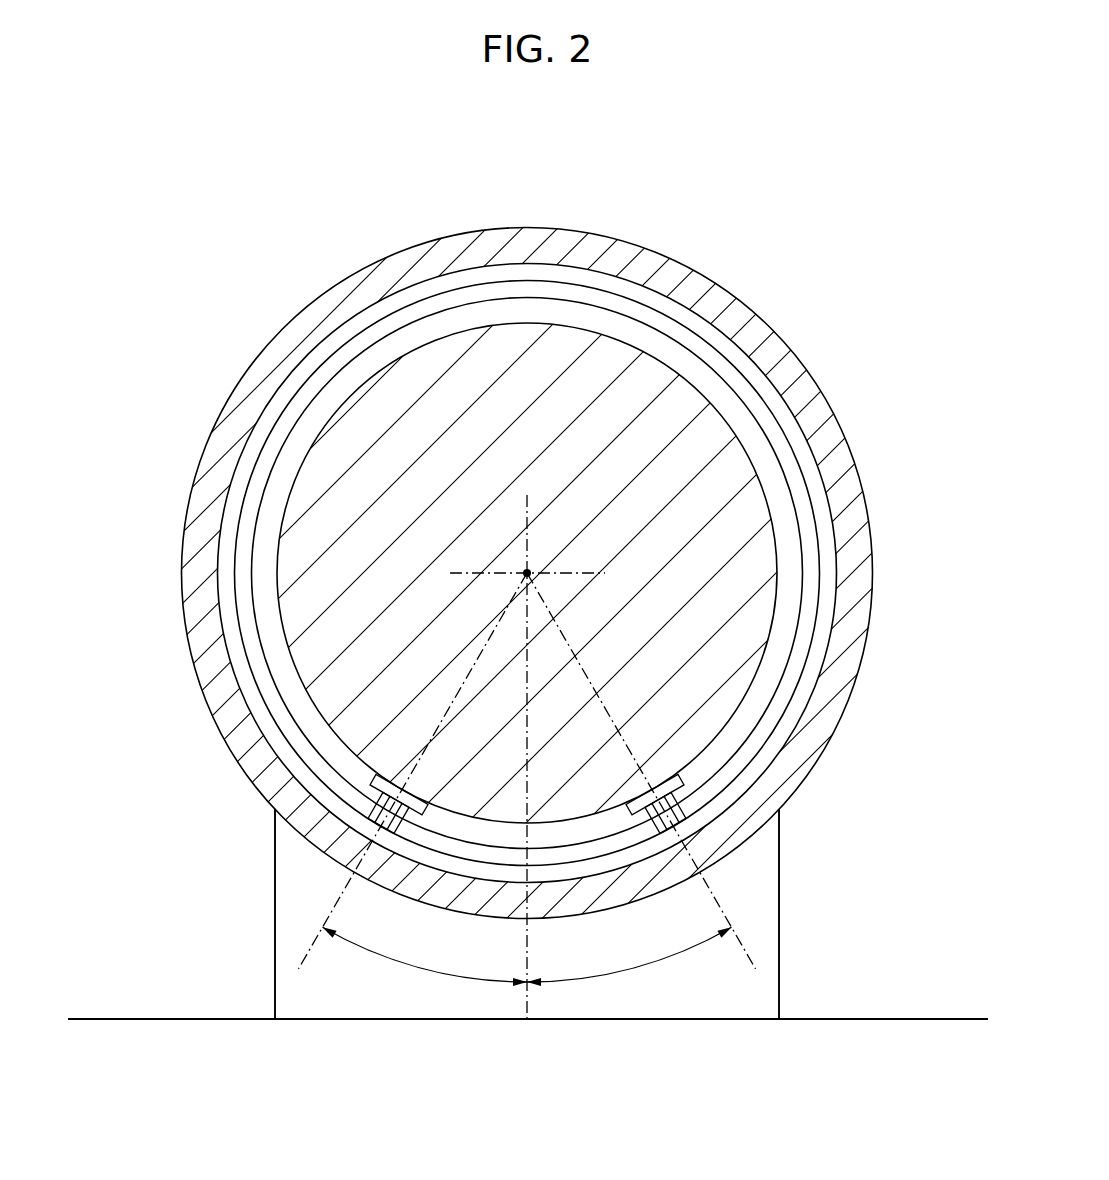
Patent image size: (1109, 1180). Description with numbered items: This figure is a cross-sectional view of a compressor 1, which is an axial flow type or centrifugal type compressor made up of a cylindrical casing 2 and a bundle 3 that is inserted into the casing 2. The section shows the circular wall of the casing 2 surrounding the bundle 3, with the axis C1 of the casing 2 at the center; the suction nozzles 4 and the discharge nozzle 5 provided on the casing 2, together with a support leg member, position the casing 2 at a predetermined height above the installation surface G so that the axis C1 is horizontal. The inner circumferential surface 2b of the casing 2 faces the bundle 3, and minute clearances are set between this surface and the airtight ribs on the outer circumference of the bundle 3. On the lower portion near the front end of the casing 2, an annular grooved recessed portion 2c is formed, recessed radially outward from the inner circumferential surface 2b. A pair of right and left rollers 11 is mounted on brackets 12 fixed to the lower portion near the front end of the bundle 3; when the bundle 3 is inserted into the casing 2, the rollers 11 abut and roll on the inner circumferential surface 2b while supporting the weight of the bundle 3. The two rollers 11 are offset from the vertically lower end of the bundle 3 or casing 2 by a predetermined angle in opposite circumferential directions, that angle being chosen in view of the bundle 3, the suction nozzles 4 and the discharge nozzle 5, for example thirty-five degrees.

The compressor 1 is at (270, 190).
The casing 2 is at (396, 246).
The inner circumferential surface 2b is at (588, 287).
The recessed portion 2c is at (238, 708).
The bundle 3 is at (697, 383).
The suction nozzle 4 is at (780, 940).
The discharge nozzle 5 is at (527, 914).
The roller 11 is at (378, 830).
The bracket 12 is at (367, 787).
The axis C1 is at (527, 573).
The installation surface G is at (140, 1019).